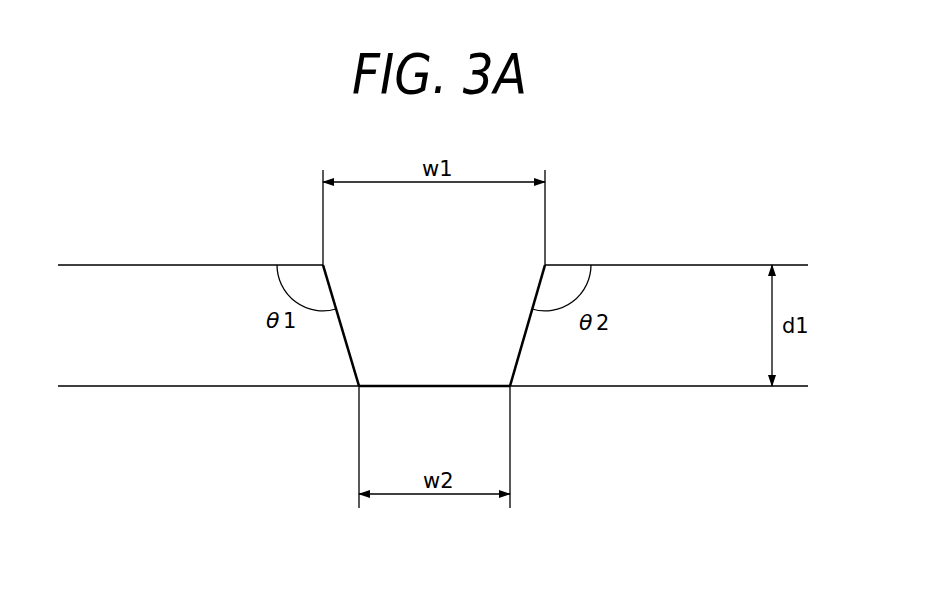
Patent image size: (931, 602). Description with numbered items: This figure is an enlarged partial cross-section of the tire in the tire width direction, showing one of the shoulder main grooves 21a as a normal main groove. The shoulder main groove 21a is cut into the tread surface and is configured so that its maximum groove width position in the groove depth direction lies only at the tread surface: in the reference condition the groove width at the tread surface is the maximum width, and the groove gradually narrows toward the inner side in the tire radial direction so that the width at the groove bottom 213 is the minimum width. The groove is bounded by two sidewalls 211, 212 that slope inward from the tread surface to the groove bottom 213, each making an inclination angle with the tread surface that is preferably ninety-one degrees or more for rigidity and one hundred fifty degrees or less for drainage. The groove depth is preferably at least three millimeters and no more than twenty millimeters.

The shoulder main groove 21a is at (496, 236).
The sidewall 211 is at (343, 331).
The sidewall 212 is at (525, 331).
The groove bottom 213 is at (428, 385).